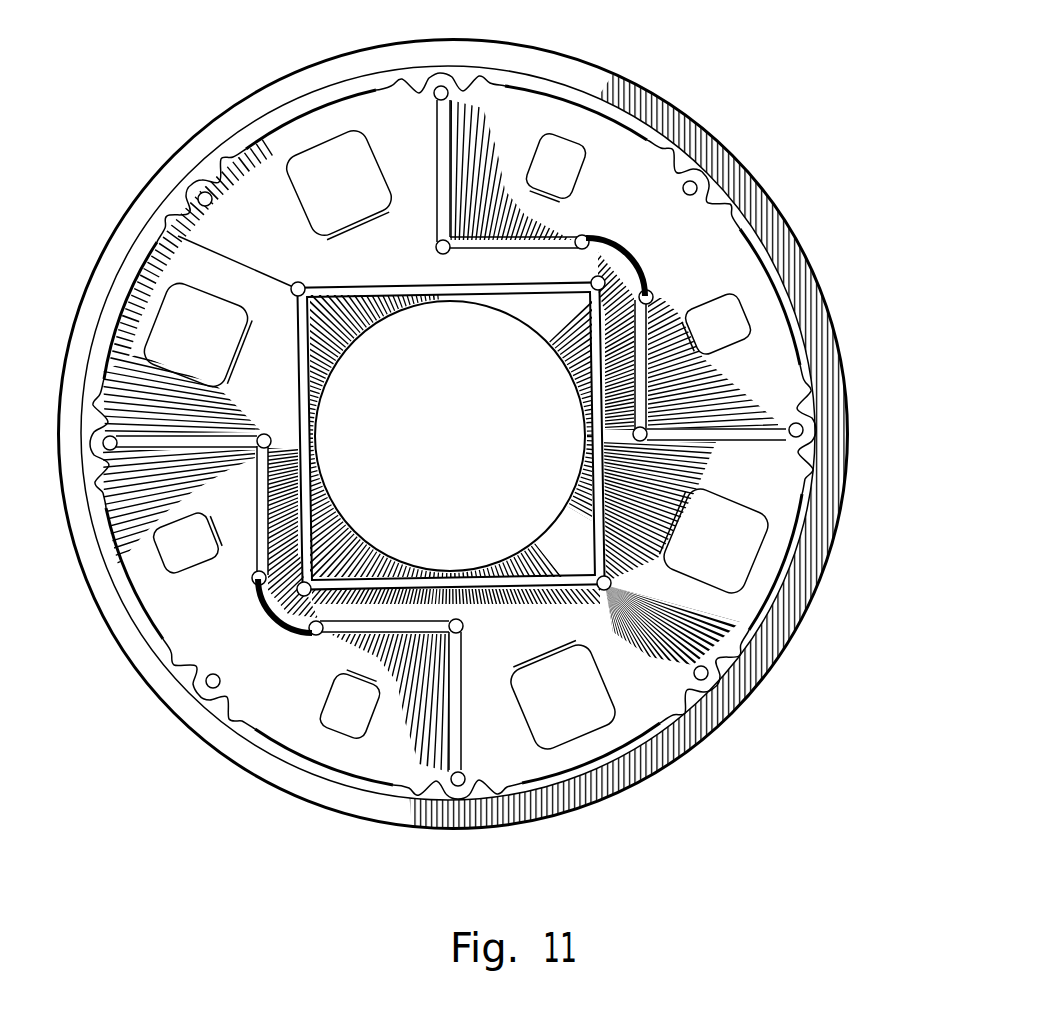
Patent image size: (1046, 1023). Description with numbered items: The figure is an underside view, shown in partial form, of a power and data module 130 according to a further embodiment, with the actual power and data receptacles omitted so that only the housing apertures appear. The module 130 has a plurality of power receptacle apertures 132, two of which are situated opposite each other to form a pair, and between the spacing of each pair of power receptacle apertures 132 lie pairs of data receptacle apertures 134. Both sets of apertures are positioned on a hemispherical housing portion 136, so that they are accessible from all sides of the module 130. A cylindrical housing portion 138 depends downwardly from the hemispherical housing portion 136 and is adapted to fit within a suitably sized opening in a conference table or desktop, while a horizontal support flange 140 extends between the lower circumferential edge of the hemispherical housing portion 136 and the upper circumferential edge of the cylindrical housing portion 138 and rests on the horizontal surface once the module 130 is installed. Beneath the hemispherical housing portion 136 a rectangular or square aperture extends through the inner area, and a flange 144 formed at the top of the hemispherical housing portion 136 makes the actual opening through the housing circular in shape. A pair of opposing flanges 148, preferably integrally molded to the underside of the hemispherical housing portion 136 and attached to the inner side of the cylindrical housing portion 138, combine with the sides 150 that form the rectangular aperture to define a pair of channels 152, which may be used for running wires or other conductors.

The power and data module 130 is at (664, 76).
The power receptacle apertures 132 is at (318, 157).
The data receptacle apertures 134 is at (577, 158).
The hemispherical housing portion 136 is at (789, 355).
The cylindrical housing portion 138 is at (735, 651).
The support flange 140 is at (567, 508).
The flange 144 is at (644, 264).
The opposing flanges 148 is at (603, 246).
The sides 150 is at (190, 243).
The channels 152 is at (478, 262).